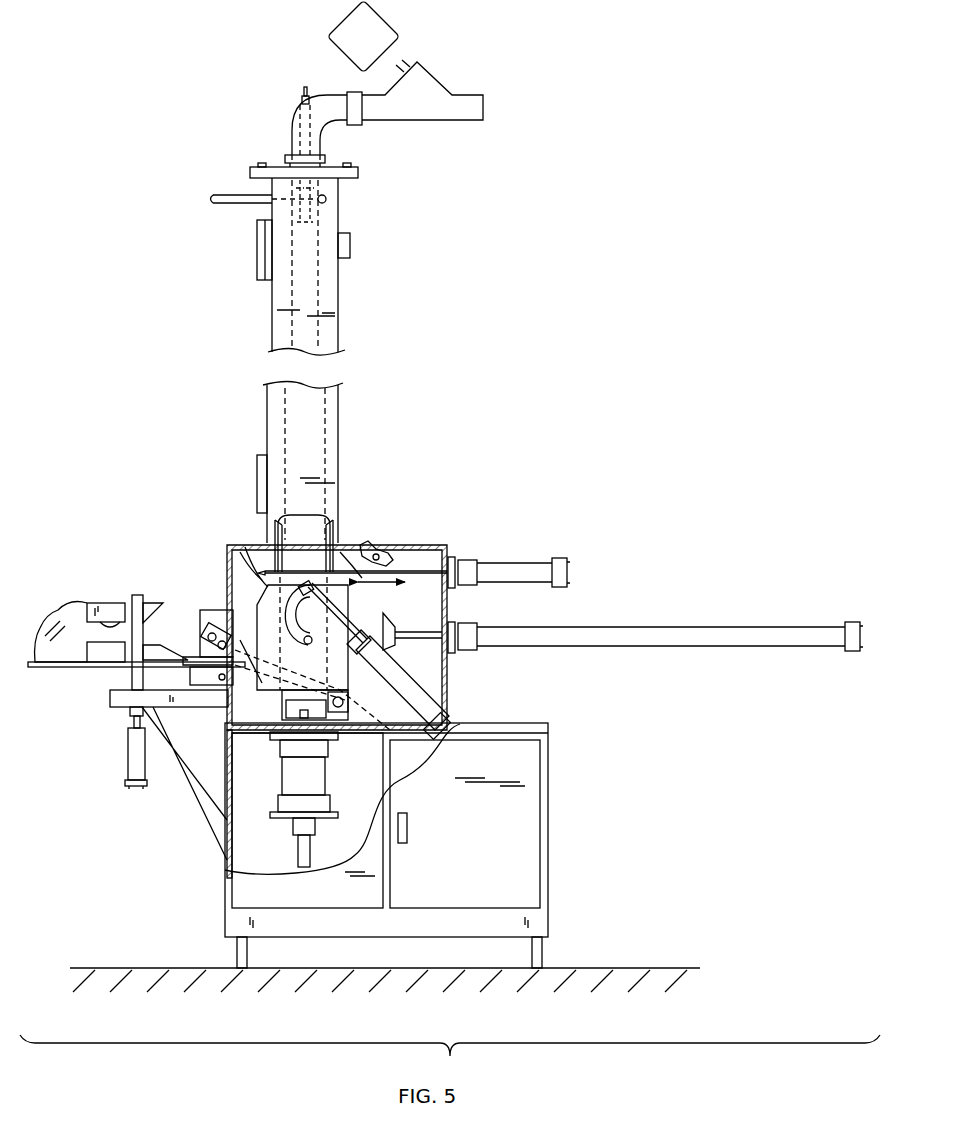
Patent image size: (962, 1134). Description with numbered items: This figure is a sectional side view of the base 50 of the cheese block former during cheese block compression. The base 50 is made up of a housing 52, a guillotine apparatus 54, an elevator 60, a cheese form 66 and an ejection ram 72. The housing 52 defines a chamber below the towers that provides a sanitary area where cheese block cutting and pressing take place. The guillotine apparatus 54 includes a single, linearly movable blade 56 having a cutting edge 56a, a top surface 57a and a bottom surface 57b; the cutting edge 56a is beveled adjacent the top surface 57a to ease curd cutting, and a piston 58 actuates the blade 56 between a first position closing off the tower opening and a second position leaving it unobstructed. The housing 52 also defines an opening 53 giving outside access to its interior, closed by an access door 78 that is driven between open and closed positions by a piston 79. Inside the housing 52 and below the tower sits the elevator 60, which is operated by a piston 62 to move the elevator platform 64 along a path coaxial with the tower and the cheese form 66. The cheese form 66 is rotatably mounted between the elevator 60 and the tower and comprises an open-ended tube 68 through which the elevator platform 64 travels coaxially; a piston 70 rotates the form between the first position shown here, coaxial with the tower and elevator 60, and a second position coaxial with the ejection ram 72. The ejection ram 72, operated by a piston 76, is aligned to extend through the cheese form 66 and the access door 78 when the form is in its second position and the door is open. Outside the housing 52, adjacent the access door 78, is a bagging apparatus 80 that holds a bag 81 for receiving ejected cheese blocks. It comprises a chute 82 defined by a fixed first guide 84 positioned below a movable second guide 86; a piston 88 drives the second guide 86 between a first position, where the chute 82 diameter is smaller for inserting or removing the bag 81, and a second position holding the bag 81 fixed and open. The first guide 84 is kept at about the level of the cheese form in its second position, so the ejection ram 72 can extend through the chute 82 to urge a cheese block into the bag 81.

The base 50 is at (447, 535).
The housing 52 is at (448, 680).
The opening 53 is at (205, 612).
The guillotine apparatus 54 is at (510, 556).
The blade 56 is at (443, 540).
The cutting edge 56a is at (263, 540).
The top surface 57a is at (350, 540).
The bottom surface 57b is at (447, 585).
The piston 58 is at (560, 565).
The elevator 60 is at (275, 803).
The piston 62 is at (300, 828).
The elevator platform 64 is at (300, 735).
The cheese form 66 is at (252, 560).
The open-ended tube 68 is at (388, 738).
The piston 70 is at (440, 716).
The ejection ram 72 is at (388, 625).
The piston 76 is at (755, 625).
The access door 78 is at (215, 612).
The piston 79 is at (228, 712).
The bagging apparatus 80 is at (104, 689).
The bag 81 is at (62, 610).
The chute 82 is at (135, 595).
The first guide 84 is at (110, 665).
The second guide 86 is at (100, 600).
The piston 88 is at (128, 780).